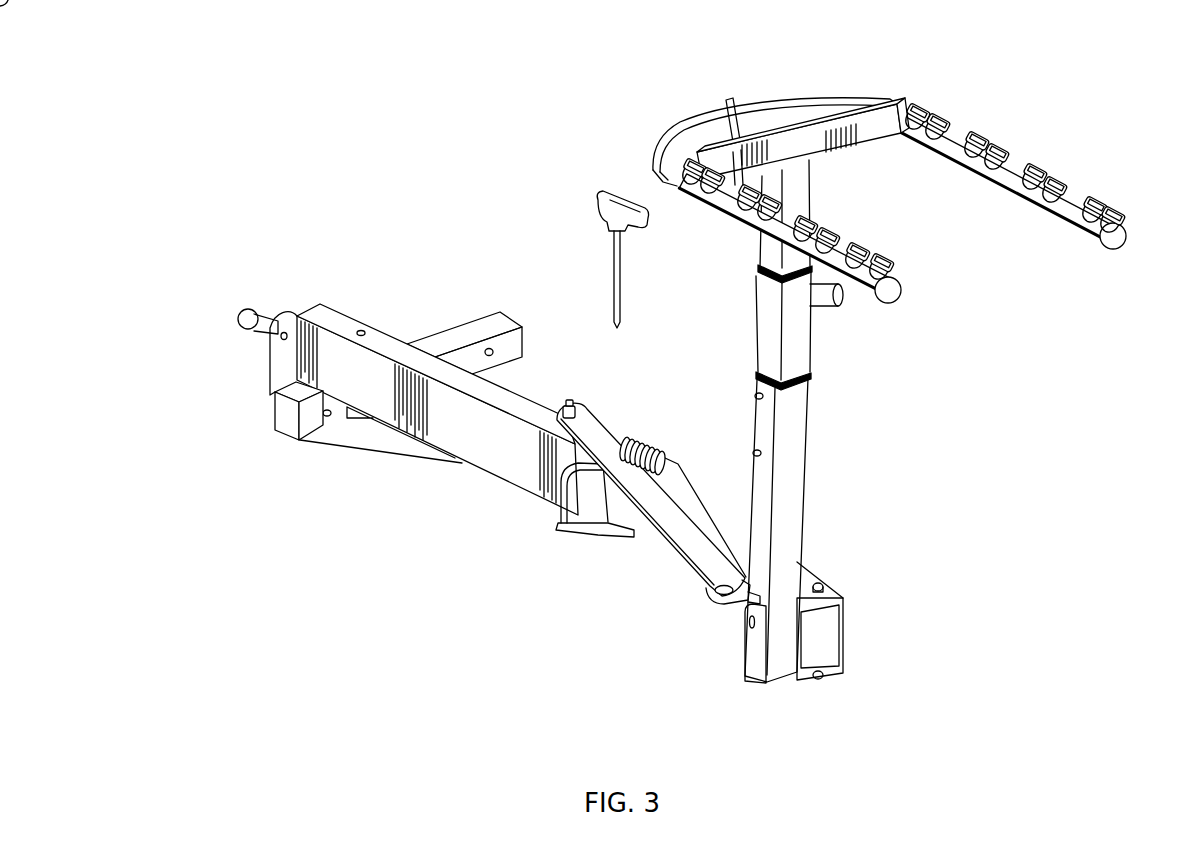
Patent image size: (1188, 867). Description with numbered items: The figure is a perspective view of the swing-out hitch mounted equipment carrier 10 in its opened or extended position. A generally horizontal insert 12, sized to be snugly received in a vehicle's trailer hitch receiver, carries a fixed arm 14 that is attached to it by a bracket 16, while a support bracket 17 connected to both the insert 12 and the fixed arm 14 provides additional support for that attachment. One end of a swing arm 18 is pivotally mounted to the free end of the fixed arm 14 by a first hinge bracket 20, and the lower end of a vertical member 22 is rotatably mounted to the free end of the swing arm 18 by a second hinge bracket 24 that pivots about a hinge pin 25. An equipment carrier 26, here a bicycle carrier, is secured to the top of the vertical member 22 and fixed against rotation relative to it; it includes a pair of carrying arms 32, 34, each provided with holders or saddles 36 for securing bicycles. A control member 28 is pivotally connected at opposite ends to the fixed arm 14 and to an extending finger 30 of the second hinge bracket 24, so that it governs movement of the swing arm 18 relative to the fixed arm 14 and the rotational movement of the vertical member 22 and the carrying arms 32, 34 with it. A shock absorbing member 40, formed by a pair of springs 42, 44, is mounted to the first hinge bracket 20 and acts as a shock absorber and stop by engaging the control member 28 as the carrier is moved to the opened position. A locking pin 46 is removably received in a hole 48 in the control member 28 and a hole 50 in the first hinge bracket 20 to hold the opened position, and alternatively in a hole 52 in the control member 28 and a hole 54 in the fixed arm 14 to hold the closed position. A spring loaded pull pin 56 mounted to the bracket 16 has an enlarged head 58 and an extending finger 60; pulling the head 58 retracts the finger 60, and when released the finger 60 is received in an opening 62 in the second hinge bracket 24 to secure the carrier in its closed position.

The swing-out hitch mounted equipment carrier 10 is at (567, 355).
The insert 12 is at (461, 328).
The fixed arm 14 is at (424, 396).
The bracket 16 is at (263, 377).
The support bracket 17 is at (367, 440).
The swing arm 18 is at (722, 510).
The first hinge bracket 20 is at (627, 542).
The vertical member 22 is at (807, 508).
The second hinge bracket 24 is at (805, 675).
The hinge pin 25 is at (832, 592).
The equipment carrier 26 is at (567, 355).
The control member 28 is at (710, 588).
The extending finger 30 is at (745, 600).
The carrying arm 32 is at (1008, 160).
The carrying arm 34 is at (840, 248).
The holders or saddles 36 is at (1062, 183).
The shock absorbing member 40 is at (679, 507).
The spring 42 is at (643, 437).
The spring 44 is at (662, 450).
The locking pin 46 is at (620, 288).
The hole 48 is at (557, 497).
The hole 50 is at (593, 532).
The hole 52 is at (688, 567).
The hole 54 is at (364, 333).
The spring loaded pull pin 56 is at (206, 296).
The enlarged head 58 is at (233, 326).
The extending finger 60 is at (279, 338).
The opening 62 is at (745, 625).